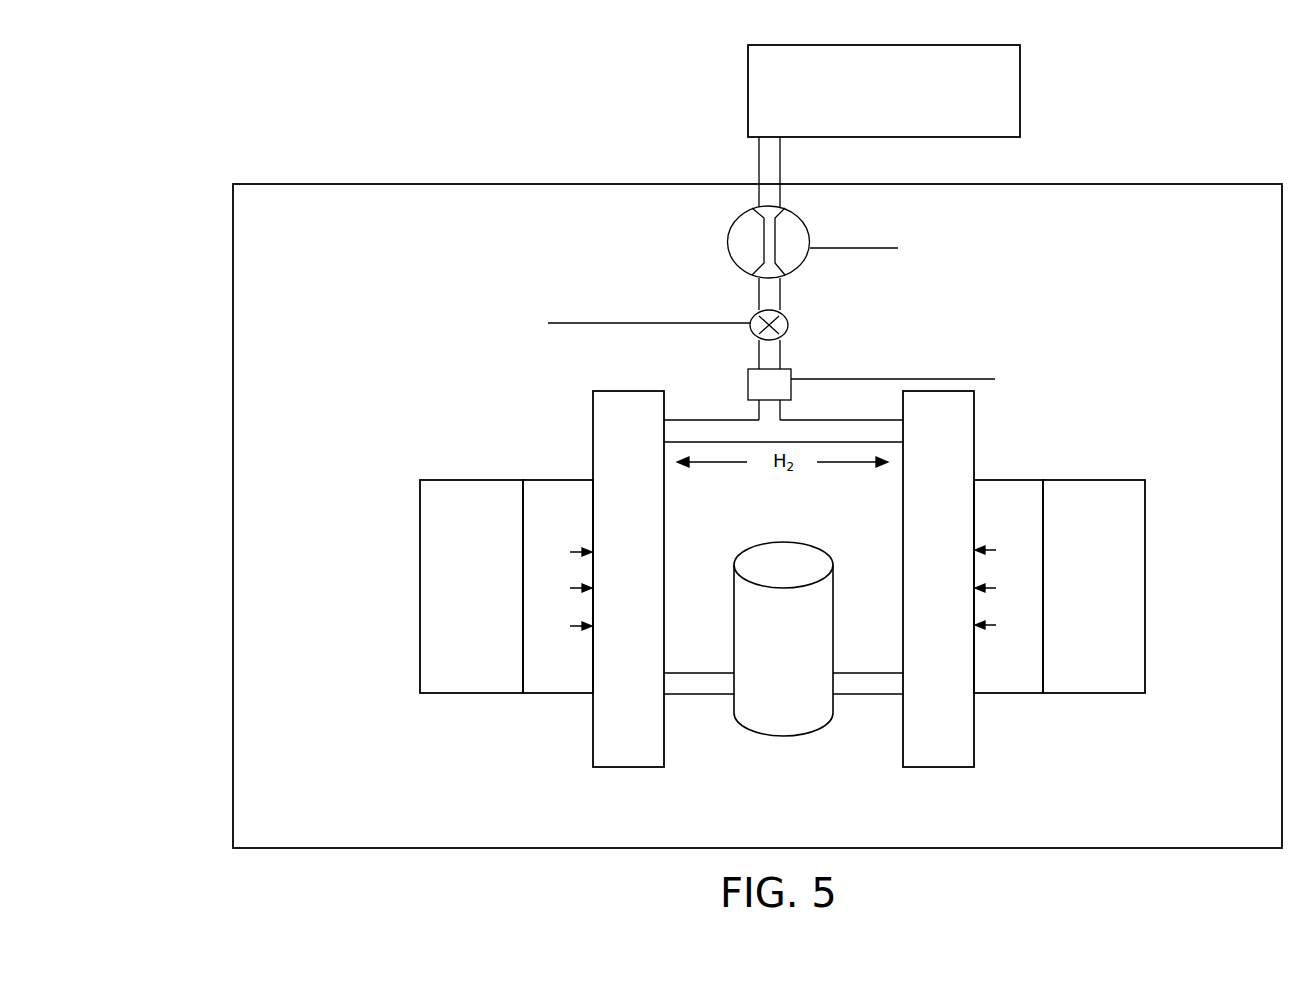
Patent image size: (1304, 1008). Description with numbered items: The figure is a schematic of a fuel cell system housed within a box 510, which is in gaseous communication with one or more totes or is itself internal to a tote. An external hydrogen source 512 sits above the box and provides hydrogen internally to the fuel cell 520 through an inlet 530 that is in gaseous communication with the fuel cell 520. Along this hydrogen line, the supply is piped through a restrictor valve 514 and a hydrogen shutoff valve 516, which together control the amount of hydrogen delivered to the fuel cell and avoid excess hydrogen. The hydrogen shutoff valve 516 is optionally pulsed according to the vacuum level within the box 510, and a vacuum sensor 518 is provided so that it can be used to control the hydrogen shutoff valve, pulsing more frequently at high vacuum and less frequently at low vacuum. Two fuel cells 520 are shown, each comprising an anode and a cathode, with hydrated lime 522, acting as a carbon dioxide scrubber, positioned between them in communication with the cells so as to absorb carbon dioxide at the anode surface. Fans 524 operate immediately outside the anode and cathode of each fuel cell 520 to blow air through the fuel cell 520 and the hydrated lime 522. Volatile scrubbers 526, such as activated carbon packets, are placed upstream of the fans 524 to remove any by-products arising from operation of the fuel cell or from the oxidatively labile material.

The box 510 is at (248, 637).
The external hydrogen source 512 is at (1008, 87).
The restrictor valve 514 is at (1083, 253).
The hydrogen shutoff valve 516 is at (538, 315).
The vacuum sensor 518 is at (1207, 367).
The fuel cell 520 is at (638, 398).
The hydrated lime 522 is at (778, 725).
The fans 524 is at (563, 490).
The volatile scrubber 526 is at (422, 572).
The inlet 530 is at (767, 163).